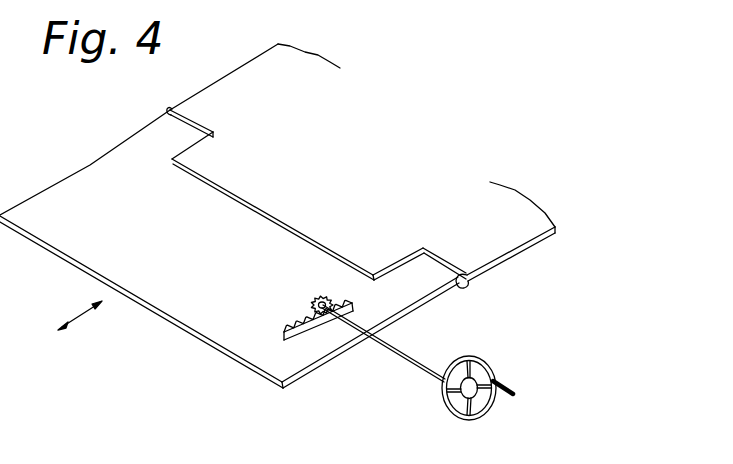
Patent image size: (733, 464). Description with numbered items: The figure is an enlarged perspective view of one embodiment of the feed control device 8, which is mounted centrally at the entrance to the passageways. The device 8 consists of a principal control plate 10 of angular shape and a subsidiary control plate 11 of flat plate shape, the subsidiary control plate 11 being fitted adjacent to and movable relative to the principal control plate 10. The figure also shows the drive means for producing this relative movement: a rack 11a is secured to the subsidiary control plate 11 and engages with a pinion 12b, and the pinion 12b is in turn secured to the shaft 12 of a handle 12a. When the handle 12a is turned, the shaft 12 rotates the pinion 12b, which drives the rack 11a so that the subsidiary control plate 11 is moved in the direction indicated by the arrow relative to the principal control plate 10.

The feed control device 8 is at (403, 146).
The principal control plate 10 is at (493, 247).
The subsidiary control plate 11 is at (187, 297).
The rack 11a is at (293, 343).
The shaft 12 is at (413, 357).
The handle 12a is at (508, 397).
The pinion 12b is at (312, 300).